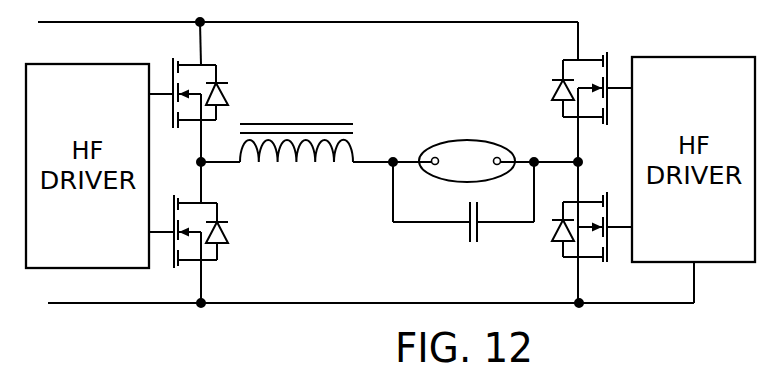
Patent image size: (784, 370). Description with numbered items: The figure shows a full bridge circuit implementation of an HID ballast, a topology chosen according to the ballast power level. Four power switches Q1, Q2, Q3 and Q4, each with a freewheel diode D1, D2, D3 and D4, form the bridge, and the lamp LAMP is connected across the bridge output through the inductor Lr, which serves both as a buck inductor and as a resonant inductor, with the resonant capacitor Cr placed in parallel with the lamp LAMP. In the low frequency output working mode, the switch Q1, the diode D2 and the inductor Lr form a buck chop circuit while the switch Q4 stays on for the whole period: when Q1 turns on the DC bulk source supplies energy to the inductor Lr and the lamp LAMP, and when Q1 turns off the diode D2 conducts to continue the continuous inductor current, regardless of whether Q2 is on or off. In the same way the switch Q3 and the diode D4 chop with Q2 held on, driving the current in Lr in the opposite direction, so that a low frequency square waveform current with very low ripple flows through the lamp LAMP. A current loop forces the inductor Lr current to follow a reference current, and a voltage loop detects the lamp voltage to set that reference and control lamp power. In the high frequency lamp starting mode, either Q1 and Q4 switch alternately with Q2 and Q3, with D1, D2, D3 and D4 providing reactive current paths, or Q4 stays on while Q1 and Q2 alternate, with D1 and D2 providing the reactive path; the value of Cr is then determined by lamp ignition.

The power switch Q1 is at (219, 93).
The power switch Q2 is at (221, 231).
The power switch Q3 is at (561, 88).
The power switch Q4 is at (562, 227).
The freewheel diode D1 is at (228, 76).
The freewheel diode D2 is at (229, 216).
The freewheel diode D3 is at (545, 74).
The freewheel diode D4 is at (552, 249).
The buck inductor Lr is at (296, 159).
The resonant capacitor Cr is at (463, 220).
The lamp LAMP is at (467, 146).